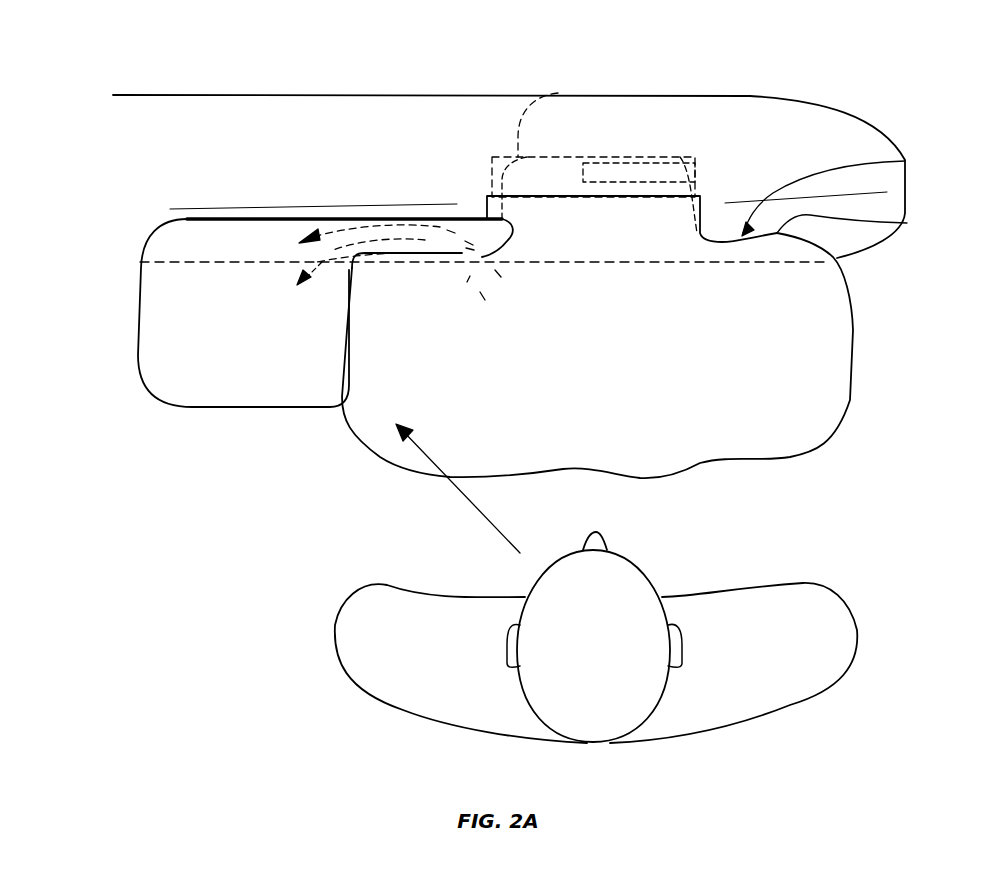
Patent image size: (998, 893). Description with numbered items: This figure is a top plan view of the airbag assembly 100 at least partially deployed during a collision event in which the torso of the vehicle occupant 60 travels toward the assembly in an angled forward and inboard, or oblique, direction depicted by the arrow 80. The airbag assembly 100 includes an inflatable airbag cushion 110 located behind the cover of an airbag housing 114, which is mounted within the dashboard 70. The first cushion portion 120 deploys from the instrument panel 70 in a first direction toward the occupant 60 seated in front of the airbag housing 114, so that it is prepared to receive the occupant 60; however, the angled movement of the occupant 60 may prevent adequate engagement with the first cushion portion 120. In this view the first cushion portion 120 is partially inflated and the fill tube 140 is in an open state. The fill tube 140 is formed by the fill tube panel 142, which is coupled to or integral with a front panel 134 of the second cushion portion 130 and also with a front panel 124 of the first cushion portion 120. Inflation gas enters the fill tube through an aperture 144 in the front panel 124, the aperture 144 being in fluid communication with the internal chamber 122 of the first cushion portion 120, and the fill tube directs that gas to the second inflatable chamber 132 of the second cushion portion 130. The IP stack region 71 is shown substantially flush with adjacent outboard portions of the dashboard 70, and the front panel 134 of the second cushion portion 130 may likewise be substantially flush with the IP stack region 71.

The vehicle occupant 60 is at (758, 663).
The dashboard 70 is at (440, 138).
The IP stack region 71 is at (246, 192).
The arrow 80 is at (462, 478).
The airbag assembly 100 is at (687, 140).
The inflatable airbag cushion 110 is at (905, 161).
The airbag housing 114 is at (558, 93).
The first cushion portion 120 is at (850, 395).
The internal chamber 122 is at (820, 352).
The front panel 124 is at (907, 223).
The second cushion portion 130 is at (198, 407).
The second inflatable chamber 132 is at (181, 343).
The front panel 134 is at (305, 217).
The fill tube 140 is at (363, 216).
The fill tube panel 142 is at (430, 216).
The aperture 144 is at (490, 255).